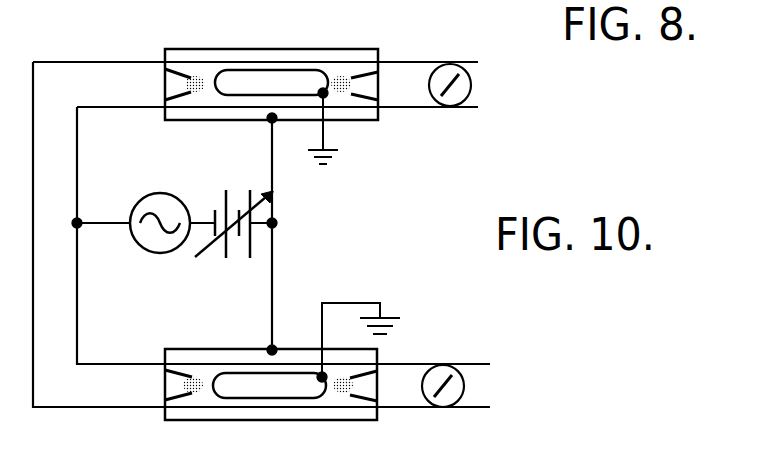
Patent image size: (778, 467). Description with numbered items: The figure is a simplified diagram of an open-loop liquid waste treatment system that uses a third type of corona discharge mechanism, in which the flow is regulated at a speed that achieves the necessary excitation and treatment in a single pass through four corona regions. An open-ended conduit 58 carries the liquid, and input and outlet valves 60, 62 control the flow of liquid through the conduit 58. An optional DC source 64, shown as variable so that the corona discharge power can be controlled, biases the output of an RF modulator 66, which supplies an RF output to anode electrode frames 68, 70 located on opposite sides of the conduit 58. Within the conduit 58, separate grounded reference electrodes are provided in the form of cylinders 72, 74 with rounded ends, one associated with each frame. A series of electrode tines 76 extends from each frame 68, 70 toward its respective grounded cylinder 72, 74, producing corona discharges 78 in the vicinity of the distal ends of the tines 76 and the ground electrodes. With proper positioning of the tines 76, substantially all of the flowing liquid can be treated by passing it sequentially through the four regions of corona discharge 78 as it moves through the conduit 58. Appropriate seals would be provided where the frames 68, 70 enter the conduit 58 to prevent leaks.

The open-ended conduit 58 is at (73, 62).
The input valve 60 is at (445, 64).
The outlet valve 62 is at (458, 366).
The DC source 64 is at (256, 200).
The RF modulator 66 is at (168, 194).
The anode electrode frame 68 is at (277, 50).
The anode electrode frame 70 is at (376, 420).
The cylinder 72 is at (220, 70).
The cylinder 74 is at (237, 373).
The electrode tines 76 is at (165, 91).
The corona discharges 78 is at (180, 82).